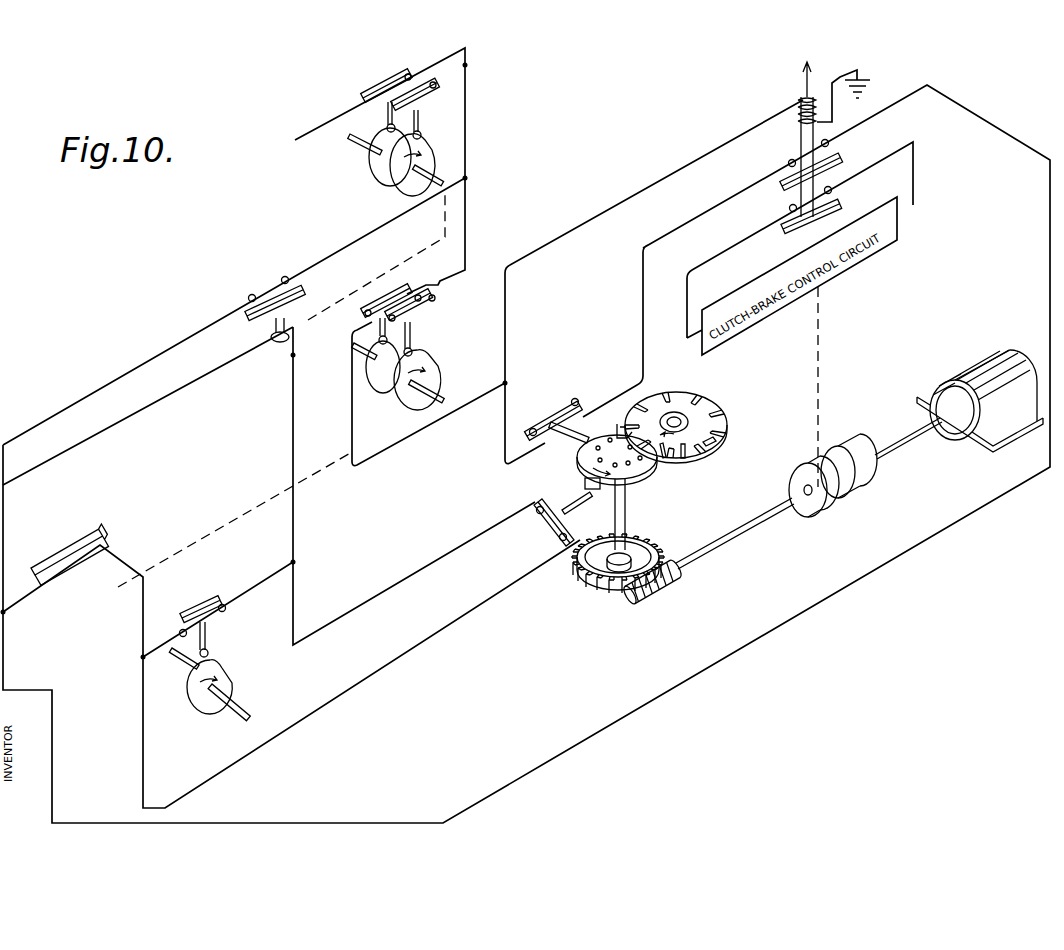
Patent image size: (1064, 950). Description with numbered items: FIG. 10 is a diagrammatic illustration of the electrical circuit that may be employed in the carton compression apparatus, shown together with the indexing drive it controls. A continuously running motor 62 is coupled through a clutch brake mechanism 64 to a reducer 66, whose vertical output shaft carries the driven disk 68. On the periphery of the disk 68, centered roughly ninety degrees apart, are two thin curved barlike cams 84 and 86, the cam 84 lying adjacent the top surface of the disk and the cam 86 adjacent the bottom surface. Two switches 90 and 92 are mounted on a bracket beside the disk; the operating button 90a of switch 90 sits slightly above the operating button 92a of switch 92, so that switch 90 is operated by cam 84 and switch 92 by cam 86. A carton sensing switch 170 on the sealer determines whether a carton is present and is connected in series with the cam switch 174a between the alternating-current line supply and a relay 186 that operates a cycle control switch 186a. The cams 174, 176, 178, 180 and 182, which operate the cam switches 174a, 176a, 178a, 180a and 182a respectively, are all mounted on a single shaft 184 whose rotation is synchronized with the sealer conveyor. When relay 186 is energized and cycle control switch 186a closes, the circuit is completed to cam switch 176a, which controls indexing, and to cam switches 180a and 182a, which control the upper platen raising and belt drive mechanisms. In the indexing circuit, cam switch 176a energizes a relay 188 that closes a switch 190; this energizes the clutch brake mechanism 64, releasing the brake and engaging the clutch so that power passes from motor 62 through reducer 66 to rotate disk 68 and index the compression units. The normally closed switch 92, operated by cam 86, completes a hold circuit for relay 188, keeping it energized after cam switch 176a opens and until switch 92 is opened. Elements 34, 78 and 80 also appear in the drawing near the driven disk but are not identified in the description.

The ratchet wheel 34 is at (731, 419).
The motor 62 is at (993, 352).
The clutch brake mechanism 64 is at (852, 445).
The reducer 66 is at (609, 604).
The driven disk 68 is at (650, 478).
The pin 78 is at (712, 447).
The pin 80 is at (687, 460).
The cam 84 is at (608, 490).
The cam 86 is at (620, 433).
The switch 90 is at (553, 528).
The operating button 90a is at (568, 500).
The switch 92 is at (555, 410).
The operating button 92a is at (578, 428).
The carton sensing switch 170 is at (78, 540).
The cam 174 is at (235, 683).
The cam switch 174a is at (210, 633).
The cam 176 is at (440, 372).
The cam switch 176a is at (414, 322).
The cam 178 is at (387, 393).
The cam switch 178a is at (400, 292).
The cam 180 is at (429, 149).
The cam switch 180a is at (420, 112).
The cam 182 is at (374, 176).
The cam switch 182a is at (380, 96).
The shaft 184 is at (355, 142).
The relay 186 is at (279, 345).
The cycle control switch 186a is at (275, 282).
The relay 188 is at (800, 100).
The switch 190 is at (836, 168).